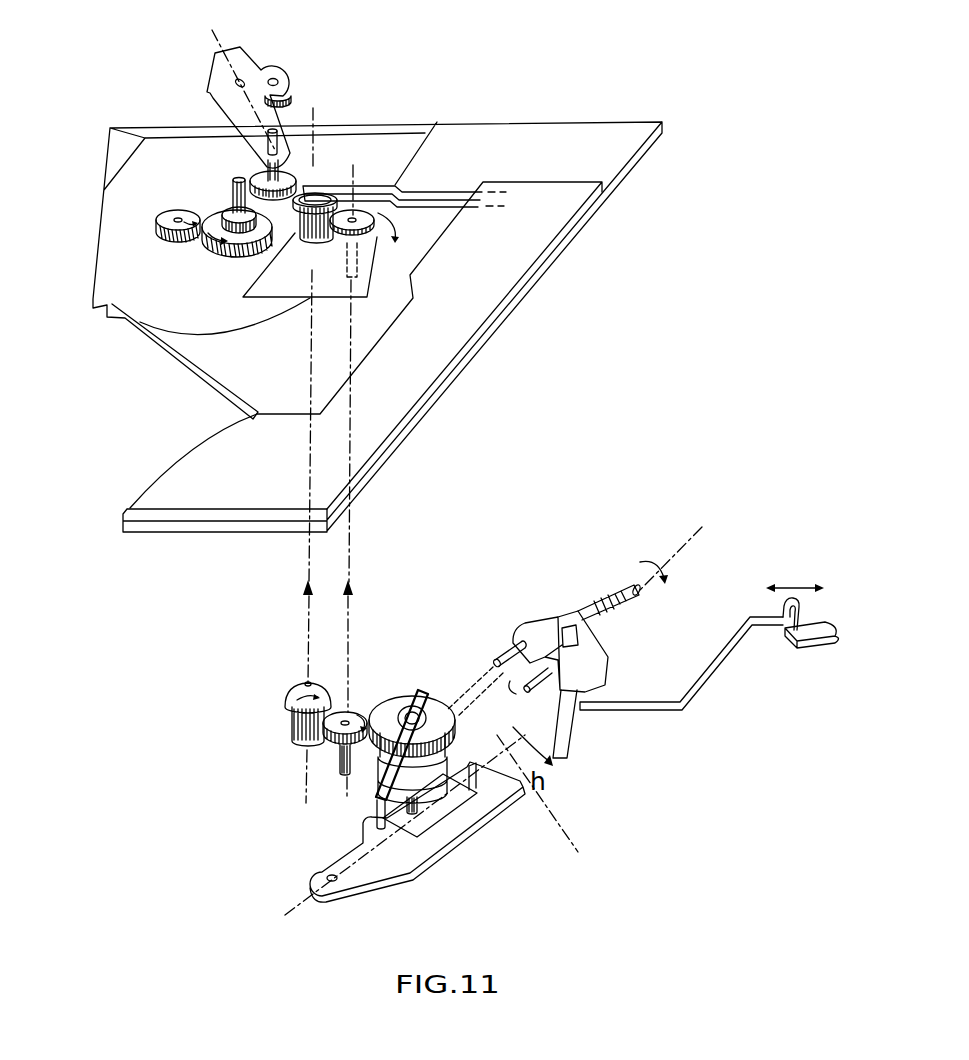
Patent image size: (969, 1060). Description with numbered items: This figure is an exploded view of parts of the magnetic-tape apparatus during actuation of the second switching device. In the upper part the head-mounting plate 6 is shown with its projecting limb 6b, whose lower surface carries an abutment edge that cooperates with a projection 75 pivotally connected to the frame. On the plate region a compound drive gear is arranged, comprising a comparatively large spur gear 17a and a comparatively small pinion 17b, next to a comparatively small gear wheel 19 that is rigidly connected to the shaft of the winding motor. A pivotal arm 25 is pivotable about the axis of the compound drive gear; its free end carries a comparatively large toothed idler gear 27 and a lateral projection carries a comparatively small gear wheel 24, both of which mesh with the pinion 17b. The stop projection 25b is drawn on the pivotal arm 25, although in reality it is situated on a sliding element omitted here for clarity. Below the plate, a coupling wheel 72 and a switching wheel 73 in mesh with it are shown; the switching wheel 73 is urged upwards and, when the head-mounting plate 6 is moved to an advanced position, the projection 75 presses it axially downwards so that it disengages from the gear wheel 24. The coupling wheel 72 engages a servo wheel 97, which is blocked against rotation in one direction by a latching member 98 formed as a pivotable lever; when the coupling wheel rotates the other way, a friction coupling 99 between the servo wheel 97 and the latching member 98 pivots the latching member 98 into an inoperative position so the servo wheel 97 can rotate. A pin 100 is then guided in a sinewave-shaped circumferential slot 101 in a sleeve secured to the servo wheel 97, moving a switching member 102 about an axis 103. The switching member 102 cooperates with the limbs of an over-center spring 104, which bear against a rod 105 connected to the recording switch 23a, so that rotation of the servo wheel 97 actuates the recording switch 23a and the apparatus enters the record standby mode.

The head-mounting plate 6 is at (407, 392).
The projecting limb 6b is at (527, 237).
The projection 75 is at (370, 188).
The pivotal arm 25 is at (238, 53).
The gear wheel 24 is at (291, 100).
The stop projection 25b is at (279, 140).
The idler gear 27 is at (288, 185).
The pinion 17b is at (222, 200).
The spur gear 17a is at (230, 234).
The gear wheel 19 is at (163, 241).
The switching wheel 73 is at (302, 242).
The coupling wheel 72 is at (374, 222).
The servo wheel 97 is at (435, 715).
The circumferential slot 101 is at (423, 785).
The friction coupling 99 is at (377, 790).
The latching member 98 is at (423, 850).
The pin 100 is at (505, 652).
The axis 103 is at (533, 685).
The switching member 102 is at (572, 616).
The over-center spring 104 is at (567, 742).
The rod 105 is at (648, 702).
The recording switch 23a is at (802, 644).